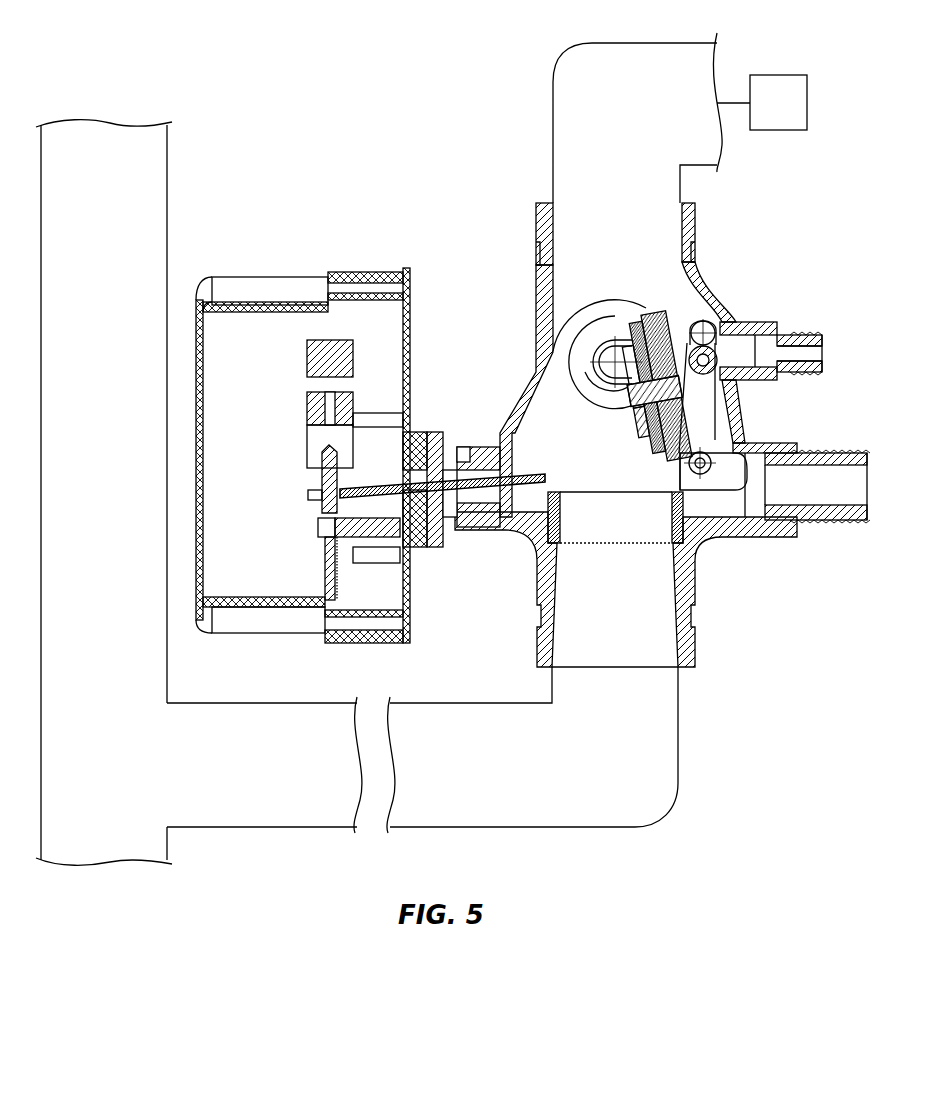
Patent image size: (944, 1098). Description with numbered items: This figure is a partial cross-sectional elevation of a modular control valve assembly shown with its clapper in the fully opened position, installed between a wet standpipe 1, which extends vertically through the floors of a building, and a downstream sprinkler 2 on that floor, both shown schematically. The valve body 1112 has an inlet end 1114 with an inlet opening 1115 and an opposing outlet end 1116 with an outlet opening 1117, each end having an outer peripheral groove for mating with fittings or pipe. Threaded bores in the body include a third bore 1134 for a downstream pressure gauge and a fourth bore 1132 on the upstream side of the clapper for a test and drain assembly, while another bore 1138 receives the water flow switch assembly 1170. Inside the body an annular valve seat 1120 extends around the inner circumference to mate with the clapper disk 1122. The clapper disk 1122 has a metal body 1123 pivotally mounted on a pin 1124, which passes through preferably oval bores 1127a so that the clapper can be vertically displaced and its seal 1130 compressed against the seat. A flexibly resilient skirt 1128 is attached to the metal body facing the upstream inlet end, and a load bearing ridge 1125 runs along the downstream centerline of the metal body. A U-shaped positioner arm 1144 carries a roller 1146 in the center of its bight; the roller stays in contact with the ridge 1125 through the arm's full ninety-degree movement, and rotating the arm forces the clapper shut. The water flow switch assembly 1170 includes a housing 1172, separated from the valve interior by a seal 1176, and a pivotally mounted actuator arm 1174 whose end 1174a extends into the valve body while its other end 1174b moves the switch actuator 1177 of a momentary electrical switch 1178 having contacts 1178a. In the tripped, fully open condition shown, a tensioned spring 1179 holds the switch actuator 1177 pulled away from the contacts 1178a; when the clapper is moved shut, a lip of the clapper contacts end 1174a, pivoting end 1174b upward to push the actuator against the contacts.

The wet standpipe 1 is at (167, 172).
The sprinkler 2 is at (778, 75).
The valve body 1112 is at (527, 352).
The inlet end 1114 is at (538, 636).
The inlet opening 1115 is at (655, 650).
The outlet end 1116 is at (536, 222).
The outlet opening 1117 is at (572, 218).
The valve seat 1120 is at (558, 523).
The clapper disk 1122 is at (675, 318).
The metal body 1123 is at (647, 310).
The pin 1124 is at (700, 470).
The load bearing ridge 1125 is at (688, 333).
The bore 1127a is at (700, 442).
The skirt 1128 is at (636, 338).
The seal 1130 is at (661, 442).
The fourth bore 1132 is at (752, 512).
The third bore 1134 is at (747, 360).
The bore 1138 is at (470, 447).
The U-shaped arm 1144 is at (560, 312).
The roller 1146 is at (723, 352).
The water flow switch assembly 1170 is at (304, 270).
The housing 1172 is at (240, 276).
The actuator arm 1174 is at (360, 490).
The end 1174a is at (510, 476).
The end 1174b is at (308, 495).
The seal 1176 is at (433, 432).
The switch actuator 1177 is at (320, 465).
The momentary electrical switch 1178 is at (305, 405).
The contacts 1178a is at (307, 385).
The tensioned spring 1179 is at (324, 570).